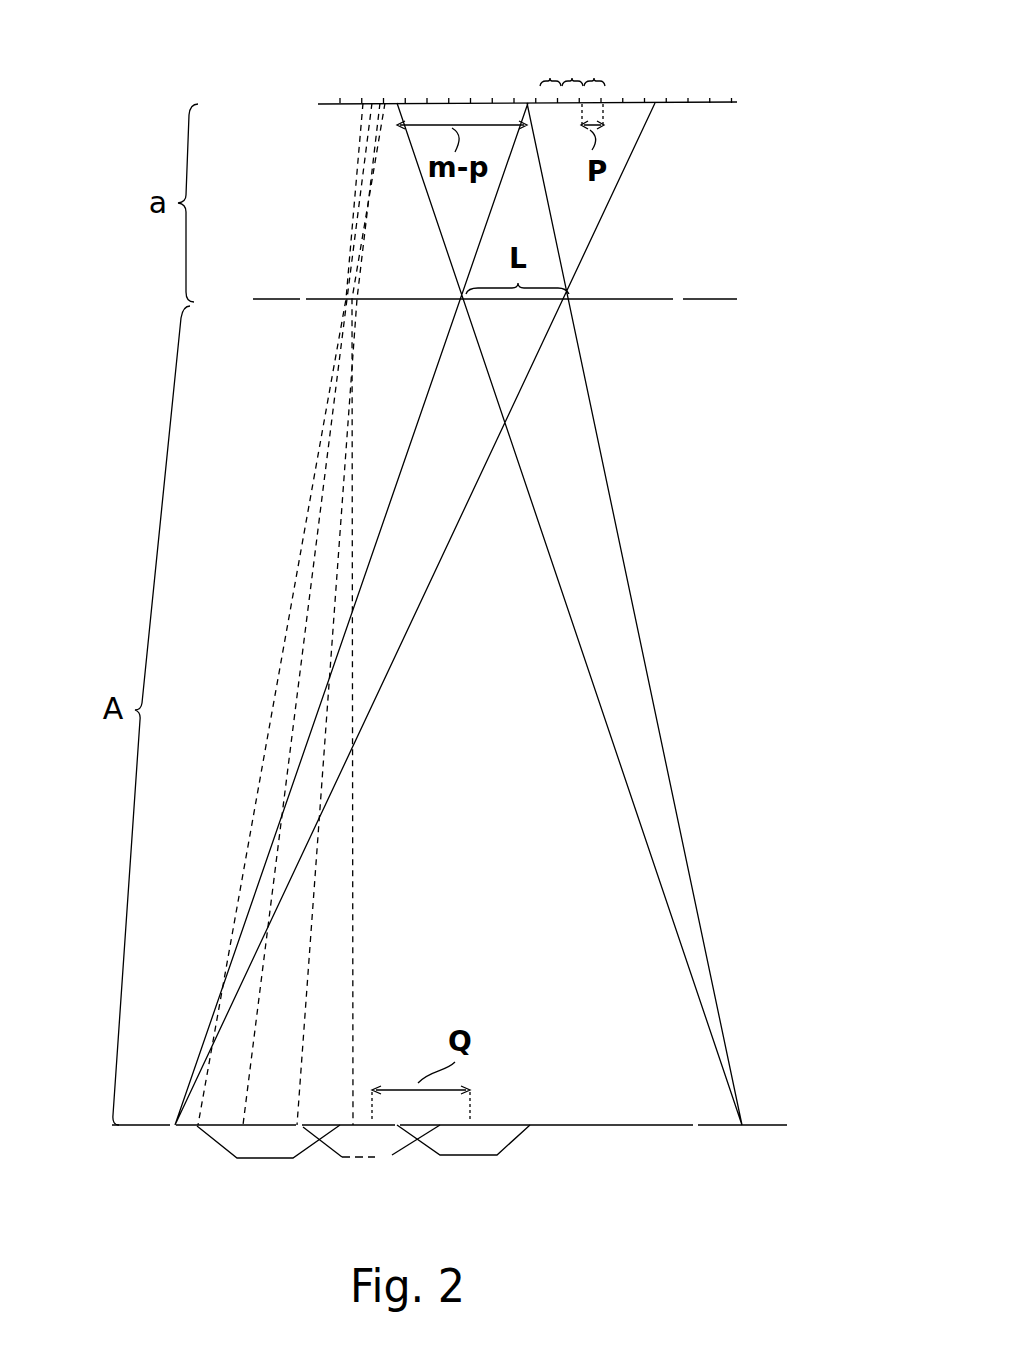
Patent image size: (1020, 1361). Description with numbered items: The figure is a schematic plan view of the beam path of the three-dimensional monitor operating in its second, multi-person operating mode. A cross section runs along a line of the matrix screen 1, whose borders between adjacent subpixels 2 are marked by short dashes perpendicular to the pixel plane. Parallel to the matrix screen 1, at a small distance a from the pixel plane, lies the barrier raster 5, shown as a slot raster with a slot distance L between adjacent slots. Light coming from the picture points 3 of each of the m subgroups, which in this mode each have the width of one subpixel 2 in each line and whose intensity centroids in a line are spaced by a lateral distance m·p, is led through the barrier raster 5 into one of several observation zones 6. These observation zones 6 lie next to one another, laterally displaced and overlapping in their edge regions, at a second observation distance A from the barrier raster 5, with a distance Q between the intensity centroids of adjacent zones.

The matrix screen 1 is at (318, 103).
The subpixels 2 is at (713, 103).
The picture points 3 is at (572, 64).
The barrier raster 5 is at (334, 298).
The observation zones 6 is at (264, 1140).